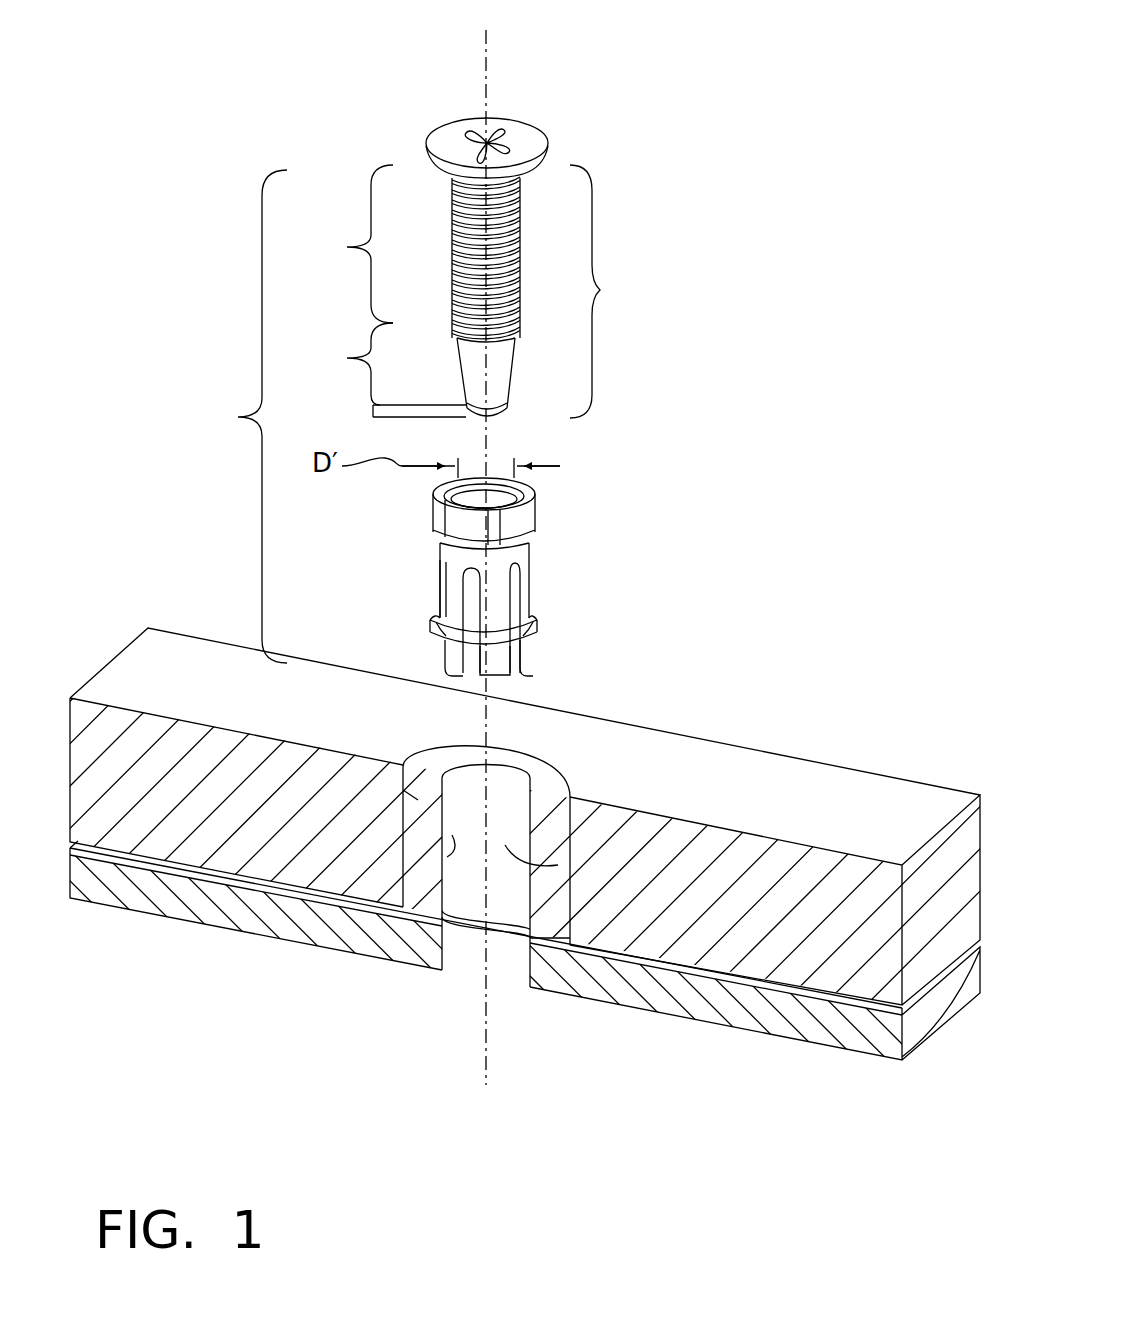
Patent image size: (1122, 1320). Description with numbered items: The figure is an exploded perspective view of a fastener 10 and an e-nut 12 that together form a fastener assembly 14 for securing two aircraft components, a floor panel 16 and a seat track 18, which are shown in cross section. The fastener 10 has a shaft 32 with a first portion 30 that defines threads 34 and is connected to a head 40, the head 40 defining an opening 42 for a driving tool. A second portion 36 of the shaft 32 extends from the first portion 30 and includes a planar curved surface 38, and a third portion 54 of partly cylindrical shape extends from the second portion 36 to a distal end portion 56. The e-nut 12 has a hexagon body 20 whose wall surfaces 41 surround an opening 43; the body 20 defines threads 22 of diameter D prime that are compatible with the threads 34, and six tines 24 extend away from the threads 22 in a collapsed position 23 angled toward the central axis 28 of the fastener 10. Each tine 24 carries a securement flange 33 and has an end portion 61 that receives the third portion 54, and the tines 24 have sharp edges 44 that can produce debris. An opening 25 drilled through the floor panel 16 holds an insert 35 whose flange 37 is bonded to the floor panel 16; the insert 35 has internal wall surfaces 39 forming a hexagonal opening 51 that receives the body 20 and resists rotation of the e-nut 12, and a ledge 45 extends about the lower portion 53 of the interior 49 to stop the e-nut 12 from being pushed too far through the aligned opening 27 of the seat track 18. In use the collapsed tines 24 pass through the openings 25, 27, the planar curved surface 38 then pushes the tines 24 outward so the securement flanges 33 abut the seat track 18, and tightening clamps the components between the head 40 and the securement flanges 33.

The fastener 10 is at (650, 97).
The e-nut 12 is at (550, 526).
The fastener assembly 14 is at (238, 418).
The floor panel 16 is at (170, 830).
The seat track 18 is at (232, 914).
The body 20 is at (439, 498).
The threads 22 is at (562, 466).
The collapsed position 23 is at (529, 614).
The tine 24 is at (463, 578).
The opening 25 is at (620, 813).
The opening 27 is at (458, 955).
The central axis 28 is at (486, 48).
The first portion 30 is at (347, 249).
The shaft 32 is at (636, 282).
The securement flange 33 is at (532, 620).
The threads 34 is at (405, 228).
The insert 35 is at (571, 841).
The second portion 36 is at (347, 358).
The flange 37 is at (372, 905).
The planar curved surface 38 is at (487, 366).
The internal wall surfaces 39 is at (420, 852).
The head 40 is at (480, 120).
The wall surfaces 41 is at (440, 504).
The opening 42 is at (490, 130).
The opening 43 is at (458, 478).
The sharp edges 44 is at (537, 570).
The ledge 45 is at (445, 965).
The interior 49 is at (455, 813).
The opening 51 is at (493, 811).
The lower portion 53 is at (446, 886).
The third portion 54 is at (373, 405).
The distal end portion 56 is at (509, 418).
The end portion 61 is at (410, 645).